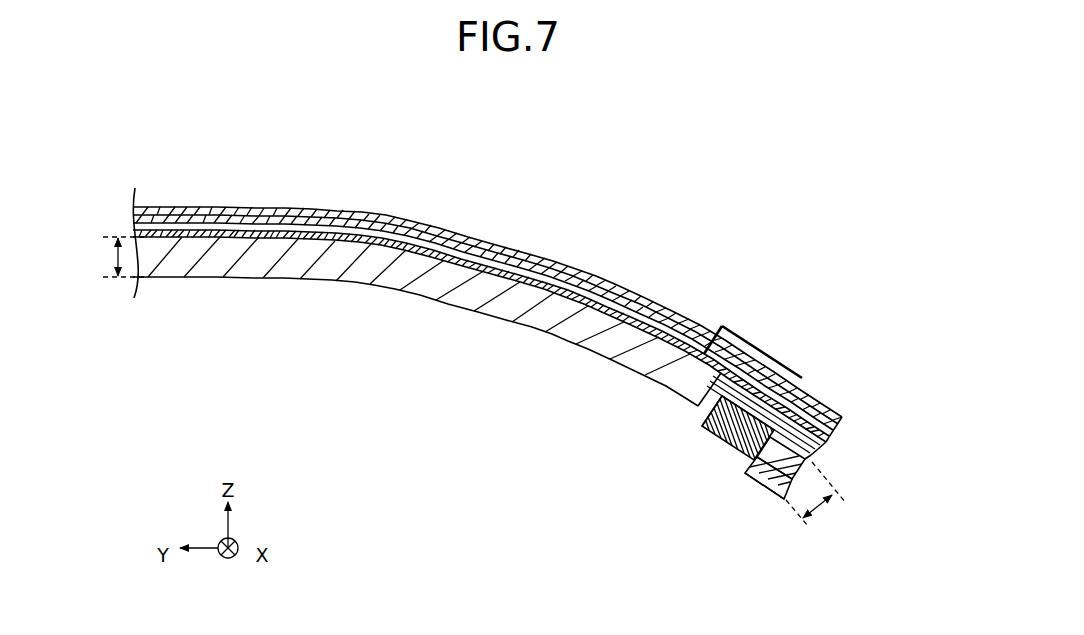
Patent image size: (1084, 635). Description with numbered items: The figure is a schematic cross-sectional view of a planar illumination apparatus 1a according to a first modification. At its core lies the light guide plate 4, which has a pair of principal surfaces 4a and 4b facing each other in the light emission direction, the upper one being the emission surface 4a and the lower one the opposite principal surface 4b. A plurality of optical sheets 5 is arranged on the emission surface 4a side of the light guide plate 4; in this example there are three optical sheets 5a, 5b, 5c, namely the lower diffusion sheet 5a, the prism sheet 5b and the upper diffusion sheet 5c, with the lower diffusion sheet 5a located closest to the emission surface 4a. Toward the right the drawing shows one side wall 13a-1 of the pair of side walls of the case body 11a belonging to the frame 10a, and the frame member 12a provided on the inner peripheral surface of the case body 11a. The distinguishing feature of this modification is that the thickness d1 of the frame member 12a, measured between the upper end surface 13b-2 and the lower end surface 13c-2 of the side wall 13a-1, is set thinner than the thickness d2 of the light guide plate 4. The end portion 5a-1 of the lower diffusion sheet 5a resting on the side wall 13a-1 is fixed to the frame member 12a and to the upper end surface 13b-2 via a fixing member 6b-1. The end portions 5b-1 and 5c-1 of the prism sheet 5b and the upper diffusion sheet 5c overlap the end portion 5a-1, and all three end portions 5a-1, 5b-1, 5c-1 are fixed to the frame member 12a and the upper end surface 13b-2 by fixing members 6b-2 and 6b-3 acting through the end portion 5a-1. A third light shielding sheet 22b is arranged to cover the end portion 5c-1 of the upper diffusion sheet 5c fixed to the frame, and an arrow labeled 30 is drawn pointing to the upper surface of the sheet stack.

The planar illumination apparatus 1a is at (798, 159).
The light guide plate 4 is at (332, 263).
The emission surface 4a is at (233, 236).
The principal surface 4b is at (243, 278).
The optical sheets 5 is at (487, 257).
The lower diffusion sheet 5a is at (475, 121).
The prism sheet 5b is at (363, 225).
The upper diffusion sheet 5c is at (418, 227).
The end portion of the lower diffusion sheet 5a-1 is at (777, 392).
The end portion of the prism sheet 5b-1 is at (812, 405).
The end portion of the upper diffusion sheet 5c-1 is at (840, 414).
The fixing member 6b-1 is at (815, 456).
The fixing member 6b-2 is at (822, 448).
The fixing member 6b-3 is at (828, 440).
The frame 10a is at (722, 510).
The case body 11a is at (772, 466).
The frame member 12a is at (745, 470).
The side wall 13a-1 is at (788, 503).
The upper end surface 13b-2 is at (713, 409).
The lower end surface 13c-2 is at (705, 424).
The third light shielding sheet 22b is at (738, 337).
The display region 30 is at (499, 216).
The thickness of the frame member d1 is at (817, 498).
The thickness of the light guide plate d2 is at (109, 257).